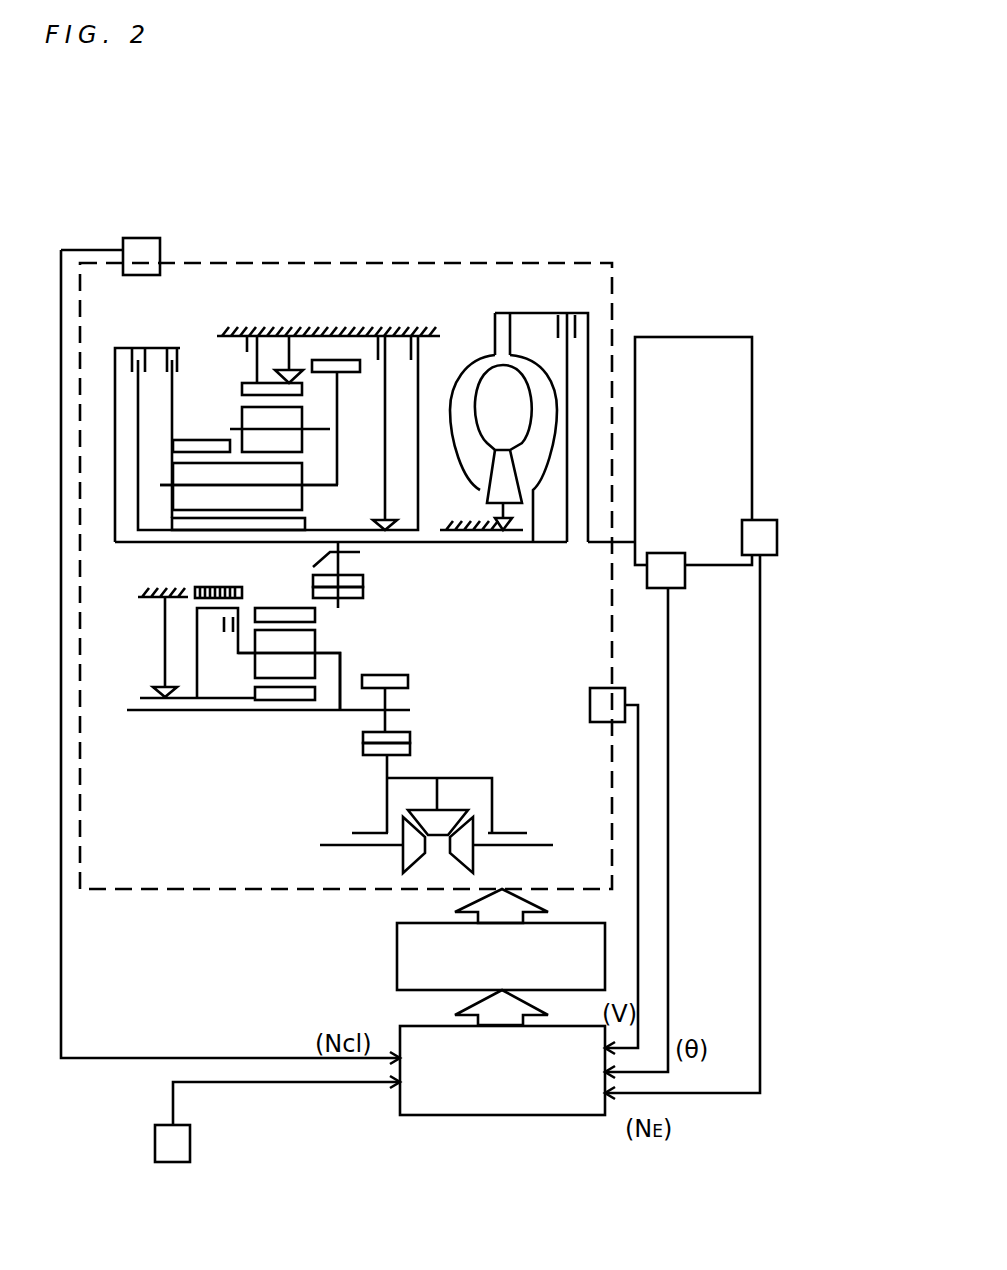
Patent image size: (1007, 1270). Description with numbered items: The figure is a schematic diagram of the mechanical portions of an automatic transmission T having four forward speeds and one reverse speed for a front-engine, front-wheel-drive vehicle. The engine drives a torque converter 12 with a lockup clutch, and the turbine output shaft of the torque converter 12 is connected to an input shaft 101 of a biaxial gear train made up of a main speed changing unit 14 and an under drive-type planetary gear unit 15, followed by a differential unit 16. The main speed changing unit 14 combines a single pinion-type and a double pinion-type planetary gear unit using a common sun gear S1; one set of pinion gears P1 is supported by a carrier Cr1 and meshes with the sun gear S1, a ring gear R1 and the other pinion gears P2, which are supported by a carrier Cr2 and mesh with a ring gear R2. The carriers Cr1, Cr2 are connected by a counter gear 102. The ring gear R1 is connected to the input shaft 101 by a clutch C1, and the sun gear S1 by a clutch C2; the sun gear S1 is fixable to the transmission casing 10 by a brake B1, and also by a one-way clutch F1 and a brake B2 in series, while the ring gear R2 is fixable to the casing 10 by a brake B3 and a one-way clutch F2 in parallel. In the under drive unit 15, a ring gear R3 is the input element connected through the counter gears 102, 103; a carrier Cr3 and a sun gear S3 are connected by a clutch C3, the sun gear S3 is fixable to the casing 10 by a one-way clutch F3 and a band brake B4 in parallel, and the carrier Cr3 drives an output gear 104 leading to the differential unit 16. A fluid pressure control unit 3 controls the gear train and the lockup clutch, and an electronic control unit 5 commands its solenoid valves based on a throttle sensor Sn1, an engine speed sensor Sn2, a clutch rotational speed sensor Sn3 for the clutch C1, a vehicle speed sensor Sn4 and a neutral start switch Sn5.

The automatic transmission T is at (385, 262).
The main speed changing unit 14 is at (341, 402).
The transmission casing 10 is at (343, 333).
The torque converter 12 is at (514, 411).
The clutch C1 is at (182, 336).
The clutch C2 is at (150, 336).
The clutch C3 is at (225, 632).
The brake B1 is at (426, 335).
The brake B2 is at (378, 348).
The brake B3 is at (232, 336).
The band brake B4 is at (233, 587).
The one-way clutch F1 is at (373, 525).
The one-way clutch F2 is at (294, 364).
The one-way clutch F3 is at (152, 692).
The ring gear R1 is at (200, 440).
The ring gear R2 is at (242, 388).
The ring gear R3 is at (283, 608).
The pinion gears P1 is at (302, 477).
The pinion gears P2 is at (302, 413).
The carrier Cr1 is at (322, 488).
The carrier Cr2 is at (330, 429).
The carrier Cr3 is at (340, 653).
The sun gear S1 is at (182, 543).
The sun gear S3 is at (288, 700).
The under drive-type planetary gear unit 15 is at (305, 664).
The differential unit 16 is at (495, 778).
The input shaft 101 is at (403, 543).
The counter gear 102 is at (363, 583).
The counter gear 103 is at (363, 596).
The output gear 104 is at (408, 681).
The fluid pressure control unit 3 is at (397, 940).
The electronic control unit 5 is at (547, 1115).
The throttle sensor Sn1 is at (677, 588).
The engine speed sensor Sn2 is at (762, 520).
The clutch rotational speed sensor Sn3 is at (145, 237).
The vehicle speed sensor Sn4 is at (590, 690).
The neutral start switch Sn5 is at (190, 1145).